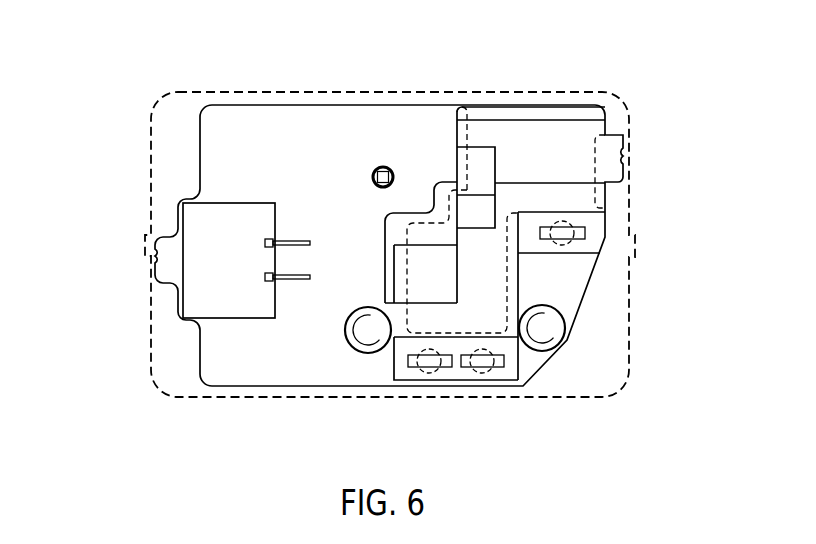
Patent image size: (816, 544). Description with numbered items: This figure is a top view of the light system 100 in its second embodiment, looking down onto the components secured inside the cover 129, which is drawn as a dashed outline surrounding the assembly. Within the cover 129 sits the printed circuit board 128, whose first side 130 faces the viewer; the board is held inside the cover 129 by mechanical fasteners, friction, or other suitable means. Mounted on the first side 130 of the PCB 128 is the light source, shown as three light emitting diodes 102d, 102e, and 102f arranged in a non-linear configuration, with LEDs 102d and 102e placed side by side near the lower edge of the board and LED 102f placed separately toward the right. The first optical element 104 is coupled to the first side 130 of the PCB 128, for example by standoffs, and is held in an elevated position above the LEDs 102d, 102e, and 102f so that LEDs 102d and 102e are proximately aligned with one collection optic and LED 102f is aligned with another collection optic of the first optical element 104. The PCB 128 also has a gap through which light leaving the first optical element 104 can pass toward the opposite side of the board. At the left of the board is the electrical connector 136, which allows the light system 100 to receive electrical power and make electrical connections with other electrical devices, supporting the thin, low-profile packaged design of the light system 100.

The light system 100 is at (515, 72).
The cover 129 is at (195, 91).
The printed circuit board 128 is at (292, 122).
The first side 130 is at (217, 153).
The electrical connector 136 is at (200, 223).
The first optical element 104 is at (553, 163).
The light emitting diode 102d is at (428, 364).
The light emitting diode 102e is at (482, 364).
The light emitting diode 102f is at (563, 235).